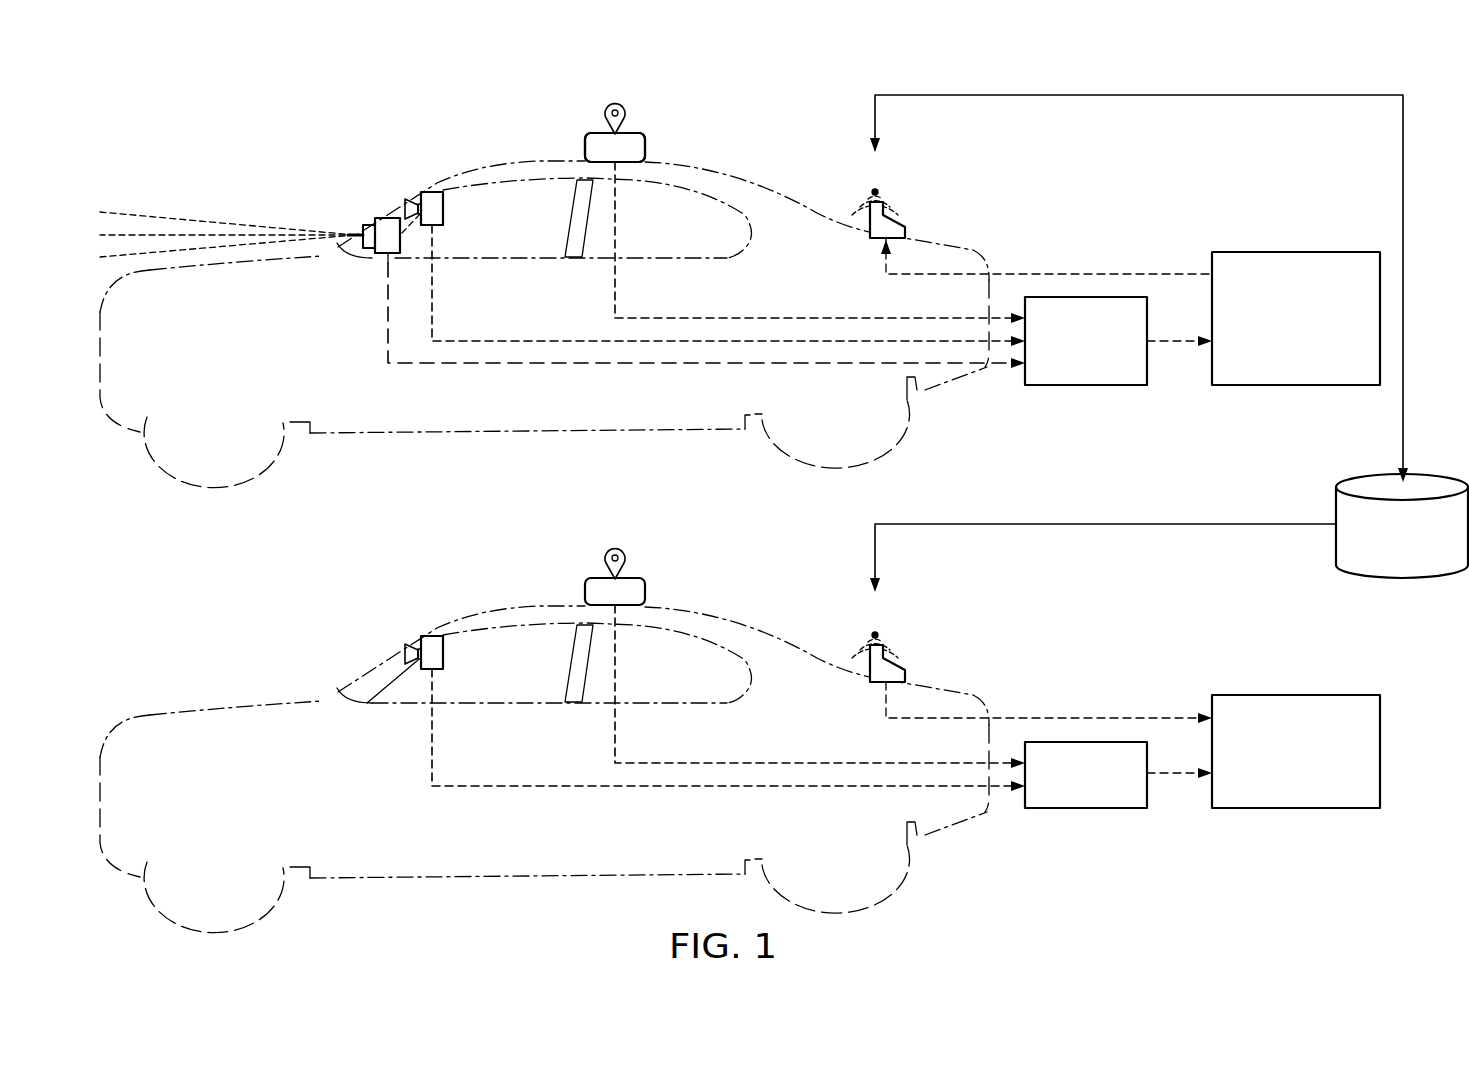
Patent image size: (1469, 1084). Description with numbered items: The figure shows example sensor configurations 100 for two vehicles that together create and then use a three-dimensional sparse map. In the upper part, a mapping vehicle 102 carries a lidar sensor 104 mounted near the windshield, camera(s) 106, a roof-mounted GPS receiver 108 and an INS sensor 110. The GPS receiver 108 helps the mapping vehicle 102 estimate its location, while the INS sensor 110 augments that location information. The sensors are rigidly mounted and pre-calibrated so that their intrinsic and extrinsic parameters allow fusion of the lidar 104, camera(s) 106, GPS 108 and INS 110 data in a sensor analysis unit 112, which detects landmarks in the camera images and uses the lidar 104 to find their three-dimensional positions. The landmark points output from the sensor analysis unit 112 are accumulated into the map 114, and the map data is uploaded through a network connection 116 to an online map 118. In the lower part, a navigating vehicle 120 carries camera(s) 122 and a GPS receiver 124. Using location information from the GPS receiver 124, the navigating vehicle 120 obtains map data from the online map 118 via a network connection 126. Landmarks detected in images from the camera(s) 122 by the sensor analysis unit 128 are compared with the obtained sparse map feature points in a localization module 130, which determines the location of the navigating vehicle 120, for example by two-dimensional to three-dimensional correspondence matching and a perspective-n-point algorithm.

The sensor configurations 100 is at (186, 97).
The mapping vehicle 102 is at (480, 434).
The lidar sensor 104 is at (380, 217).
The camera(s) 106 is at (437, 190).
The GPS receiver 108 is at (598, 132).
The INS sensor 110 is at (645, 147).
The sensor analysis unit 112 is at (1085, 387).
The map 114 is at (1300, 387).
The network connection 116 is at (907, 230).
The online map 118 is at (1412, 578).
The navigating vehicle 120 is at (480, 879).
The camera(s) 122 is at (425, 634).
The GPS receiver 124 is at (645, 593).
The network connection 126 is at (907, 675).
The sensor analysis unit 128 is at (1085, 810).
The localization module 130 is at (1298, 810).